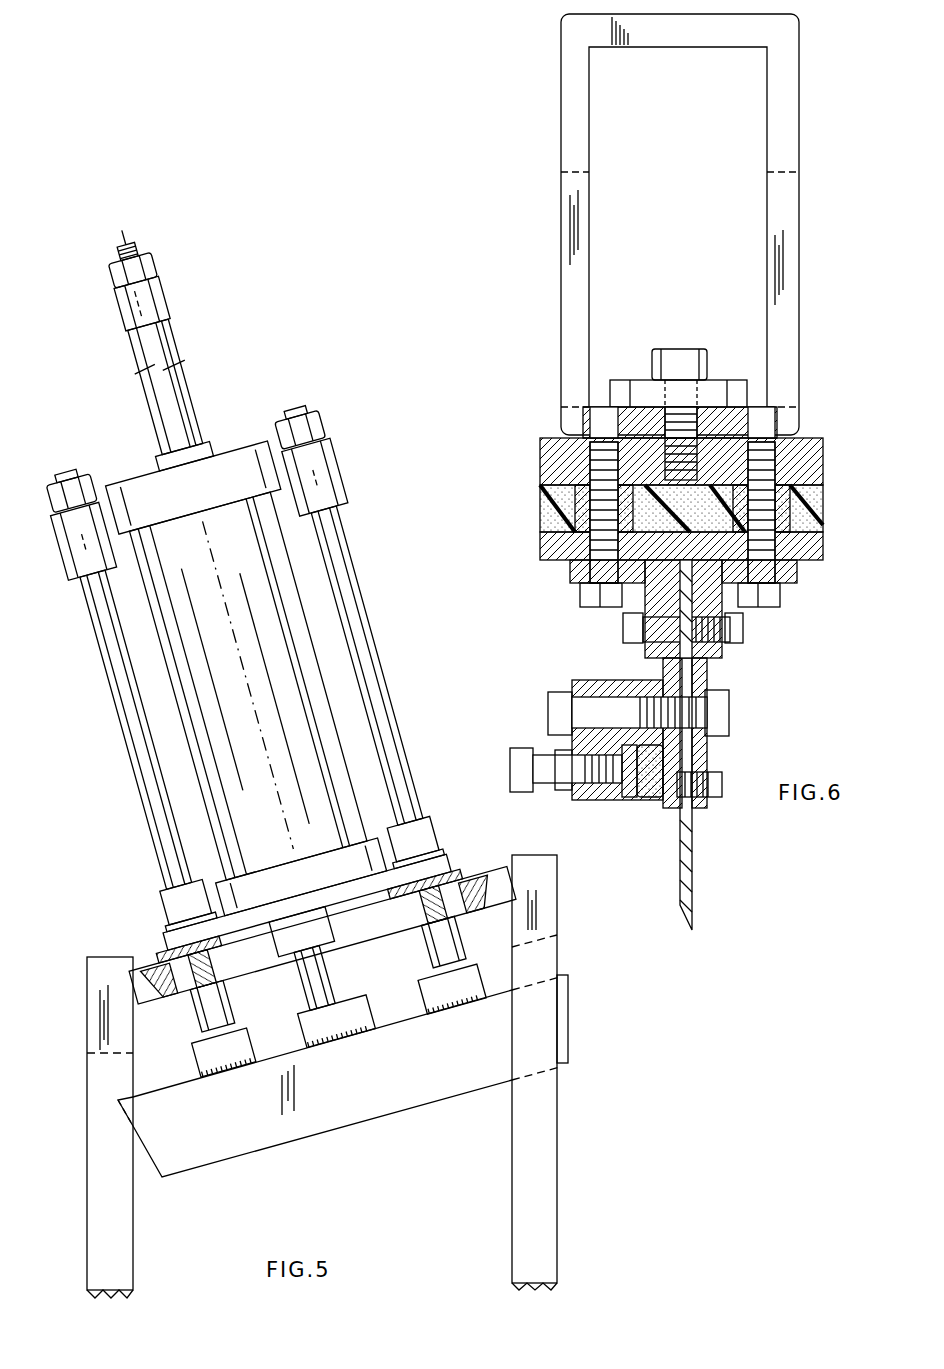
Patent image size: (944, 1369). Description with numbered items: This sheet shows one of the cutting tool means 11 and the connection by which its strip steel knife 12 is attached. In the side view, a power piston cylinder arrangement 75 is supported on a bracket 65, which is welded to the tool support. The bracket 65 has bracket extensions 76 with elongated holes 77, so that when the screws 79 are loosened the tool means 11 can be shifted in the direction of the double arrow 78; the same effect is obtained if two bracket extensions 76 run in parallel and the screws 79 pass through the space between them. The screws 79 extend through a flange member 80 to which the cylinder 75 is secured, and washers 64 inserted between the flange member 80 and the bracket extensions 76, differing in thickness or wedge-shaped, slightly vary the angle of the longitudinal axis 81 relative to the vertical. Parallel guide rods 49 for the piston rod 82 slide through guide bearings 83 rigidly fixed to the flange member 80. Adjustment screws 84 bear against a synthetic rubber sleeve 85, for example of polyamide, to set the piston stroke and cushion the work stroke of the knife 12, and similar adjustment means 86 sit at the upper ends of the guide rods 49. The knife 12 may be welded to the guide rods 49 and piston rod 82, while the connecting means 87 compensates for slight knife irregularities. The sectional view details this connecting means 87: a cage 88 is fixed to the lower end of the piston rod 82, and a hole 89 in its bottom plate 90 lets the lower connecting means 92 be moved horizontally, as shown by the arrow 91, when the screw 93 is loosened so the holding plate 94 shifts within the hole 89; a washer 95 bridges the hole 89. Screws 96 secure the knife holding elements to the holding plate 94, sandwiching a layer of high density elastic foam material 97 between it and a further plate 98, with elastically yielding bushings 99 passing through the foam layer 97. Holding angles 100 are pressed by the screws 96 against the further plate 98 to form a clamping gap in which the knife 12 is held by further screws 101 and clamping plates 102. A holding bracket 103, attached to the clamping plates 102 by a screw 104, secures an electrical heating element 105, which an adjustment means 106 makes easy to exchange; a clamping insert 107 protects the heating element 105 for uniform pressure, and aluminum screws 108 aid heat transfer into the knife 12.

In FIG. 5, the tool means 11 is at (275, 358).
In FIG. 5, the knife 12 is at (240, 1150).
In FIG. 6, the knife 12 is at (694, 852).
In FIG. 5, the guide rods 49 is at (106, 700).
In FIG. 5, the washers 64 is at (226, 957).
In FIG. 5, the brackets 65 is at (86, 1172).
In FIG. 5, the power piston cylinder arrangement 75 is at (304, 636).
In FIG. 5, the bracket extensions 76 is at (150, 975).
In FIG. 5, the elongated holes 77 is at (190, 1005).
In FIG. 5, the double arrow 78 is at (345, 1150).
In FIG. 5, the screws 79 is at (230, 990).
In FIG. 5, the flange member 80 is at (374, 900).
In FIG. 5, the longitudinal axis 81 is at (232, 620).
In FIG. 5, the piston rod 82 is at (190, 380).
In FIG. 5, the guide bearings 83 is at (170, 900).
In FIG. 5, the adjustment screws 84 is at (150, 262).
In FIG. 5, the synthetic rubber sleeve 85 is at (172, 306).
In FIG. 5, the adjustment means 86 is at (326, 444).
In FIG. 5, the connecting means 87 is at (364, 1010).
In FIG. 6, the connecting means 87 is at (830, 178).
In FIG. 6, the cage 88 is at (802, 120).
In FIG. 6, the hole 89 is at (710, 400).
In FIG. 6, the bottom plate 90 is at (775, 425).
In FIG. 6, the arrow 91 is at (822, 353).
In FIG. 6, the lower connecting means 92 is at (774, 622).
In FIG. 6, the screw 93 is at (660, 345).
In FIG. 6, the holding plate 94 is at (824, 455).
In FIG. 6, the washer 95 is at (632, 380).
In FIG. 6, the screws 96 is at (582, 605).
In FIG. 6, the foam layer 97 is at (540, 520).
In FIG. 6, the further plate 98 is at (824, 540).
In FIG. 6, the bushings 99 is at (575, 480).
In FIG. 6, the holding angles 100 is at (570, 575).
In FIG. 6, the further screws 101 is at (622, 633).
In FIG. 6, the clamping plates 102 is at (668, 672).
In FIG. 6, the holding bracket 103 is at (580, 684).
In FIG. 6, the screw 104 is at (731, 710).
In FIG. 6, the electrical heating element 105 is at (650, 798).
In FIG. 6, the adjustment means 106 is at (520, 748).
In FIG. 6, the clamping insert 107 is at (630, 798).
In FIG. 6, the aluminum screws 108 is at (705, 770).